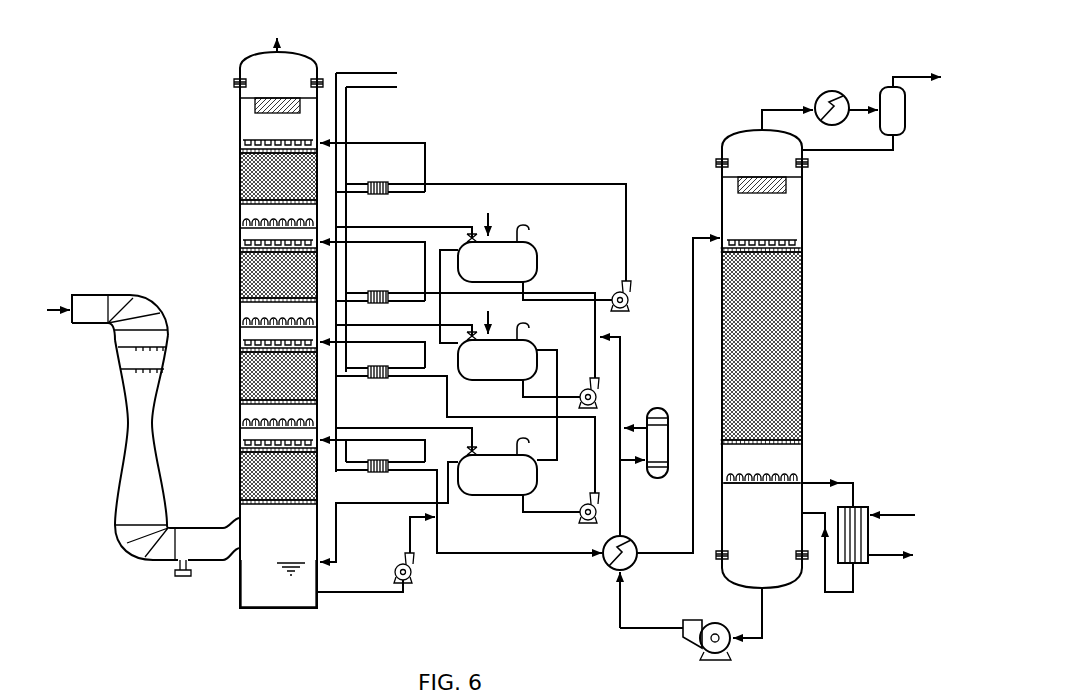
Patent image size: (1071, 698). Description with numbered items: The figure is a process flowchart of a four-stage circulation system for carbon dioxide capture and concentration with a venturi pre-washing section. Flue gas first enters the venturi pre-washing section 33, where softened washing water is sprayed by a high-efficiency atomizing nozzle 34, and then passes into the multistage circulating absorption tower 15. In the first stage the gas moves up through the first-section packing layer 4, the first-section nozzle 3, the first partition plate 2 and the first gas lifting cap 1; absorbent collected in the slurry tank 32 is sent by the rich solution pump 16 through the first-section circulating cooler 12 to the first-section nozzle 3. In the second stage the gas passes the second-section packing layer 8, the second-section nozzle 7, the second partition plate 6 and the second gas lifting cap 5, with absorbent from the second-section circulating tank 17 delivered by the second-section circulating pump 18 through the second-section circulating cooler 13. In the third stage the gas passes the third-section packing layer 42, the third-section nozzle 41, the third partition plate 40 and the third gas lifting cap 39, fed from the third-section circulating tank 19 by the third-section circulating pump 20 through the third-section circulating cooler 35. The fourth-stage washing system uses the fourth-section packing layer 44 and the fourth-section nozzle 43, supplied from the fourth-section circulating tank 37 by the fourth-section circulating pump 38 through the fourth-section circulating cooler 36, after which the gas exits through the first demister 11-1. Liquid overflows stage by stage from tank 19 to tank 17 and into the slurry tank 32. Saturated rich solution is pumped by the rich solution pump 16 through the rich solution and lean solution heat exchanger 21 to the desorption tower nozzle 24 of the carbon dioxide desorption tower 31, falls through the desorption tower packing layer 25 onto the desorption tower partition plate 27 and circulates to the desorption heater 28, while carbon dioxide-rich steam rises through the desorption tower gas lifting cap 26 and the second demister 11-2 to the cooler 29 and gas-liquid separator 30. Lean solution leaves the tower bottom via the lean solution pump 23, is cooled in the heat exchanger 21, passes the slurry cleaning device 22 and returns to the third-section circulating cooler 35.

The first gas lifting cap 1 is at (240, 422).
The first partition plate 2 is at (250, 433).
The first-section nozzle 3 is at (248, 452).
The first-section packing layer 4 is at (250, 478).
The second gas lifting cap 5 is at (240, 323).
The second partition plate 6 is at (250, 334).
The second-section nozzle 7 is at (248, 352).
The second-section packing layer 8 is at (250, 377).
The first demister 11-1 is at (252, 110).
The second demister 11-2 is at (735, 194).
The first-section circulating cooler 12 is at (373, 472).
The second-section circulating cooler 13 is at (373, 379).
The multistage circulating absorption tower 15 is at (235, 62).
The rich solution pump 16 is at (395, 568).
The second-section circulating tank 17 is at (471, 497).
The second-section circulating pump 18 is at (578, 522).
The third-section circulating tank 19 is at (468, 383).
The third-section circulating pump 20 is at (588, 375).
The rich solution and lean solution heat exchanger 21 is at (632, 539).
The slurry cleaning device 22 is at (658, 407).
The lean solution pump 23 is at (682, 637).
The desorption tower nozzle 24 is at (796, 247).
The desorption tower packing layer 25 is at (798, 381).
The desorption tower gas lifting cap 26 is at (783, 473).
The desorption tower partition plate 27 is at (801, 481).
The desorption heater 28 is at (860, 506).
The cooler 29 is at (815, 97).
The gas-liquid separator 30 is at (906, 131).
The carbon dioxide desorption tower 31 is at (720, 136).
The slurry tank 32 is at (248, 583).
The venturi pre-washing section 33 is at (126, 424).
The high-efficiency atomizing nozzle 34 is at (117, 369).
The third-section circulating cooler 35 is at (369, 291).
The fourth-section circulating cooler 36 is at (372, 181).
The fourth-section circulating tank 37 is at (538, 243).
The fourth-section circulating pump 38 is at (629, 280).
The third gas lifting cap 39 is at (240, 224).
The third partition plate 40 is at (250, 234).
The third-section nozzle 41 is at (248, 251).
The third-section packing layer 42 is at (250, 278).
The fourth-section nozzle 43 is at (242, 151).
The fourth-section packing layer 44 is at (250, 178).